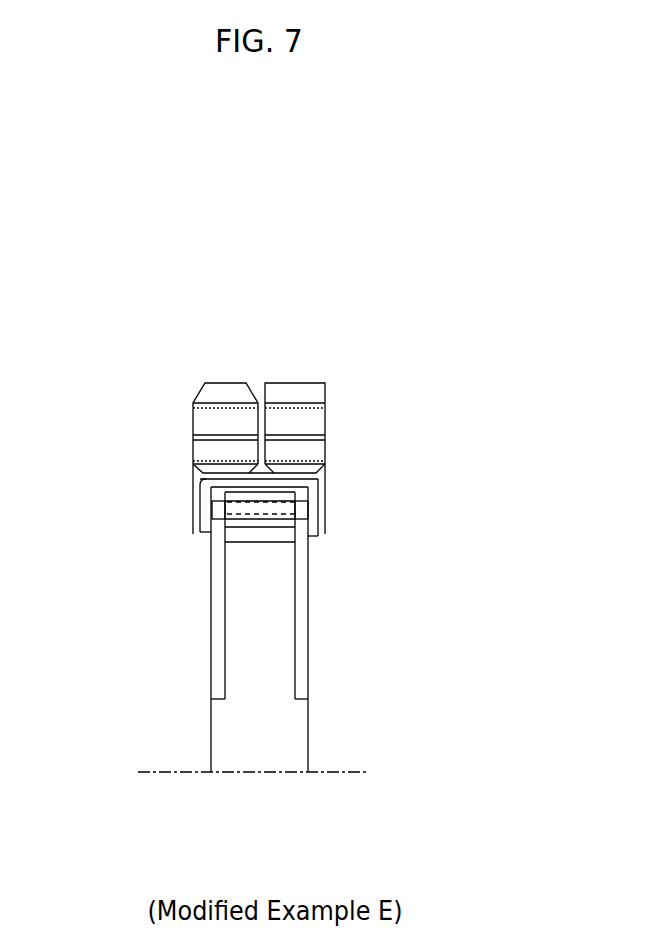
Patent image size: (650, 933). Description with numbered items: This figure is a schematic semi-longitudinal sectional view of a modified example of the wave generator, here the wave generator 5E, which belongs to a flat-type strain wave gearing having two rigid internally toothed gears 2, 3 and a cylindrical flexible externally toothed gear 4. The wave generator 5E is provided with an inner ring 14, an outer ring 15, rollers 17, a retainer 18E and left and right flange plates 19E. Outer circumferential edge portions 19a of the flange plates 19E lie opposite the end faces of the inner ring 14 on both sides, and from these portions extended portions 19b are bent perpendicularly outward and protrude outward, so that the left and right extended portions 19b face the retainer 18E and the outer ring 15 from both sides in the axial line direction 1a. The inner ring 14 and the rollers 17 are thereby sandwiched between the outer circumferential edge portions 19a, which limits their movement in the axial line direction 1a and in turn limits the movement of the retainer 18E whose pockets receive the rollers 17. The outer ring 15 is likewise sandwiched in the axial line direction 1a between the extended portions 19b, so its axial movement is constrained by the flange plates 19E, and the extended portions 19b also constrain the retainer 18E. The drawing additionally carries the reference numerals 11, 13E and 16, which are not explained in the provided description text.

The rigid internally toothed gear 2 is at (335, 391).
The rigid internally toothed gear 3 is at (183, 391).
The cylindrical flexible externally toothed gear 4 is at (179, 483).
The wave generator 5E is at (182, 594).
The shaft 11 is at (265, 683).
The axial line direction 1a is at (340, 774).
The laminated assembly 13E is at (346, 506).
The inner ring 14 is at (319, 558).
The outer ring 15 is at (290, 482).
The upper layer 16 is at (320, 494).
The rollers 17 is at (272, 509).
The retainer 18E is at (297, 508).
The outer circumferential edge portions 19a is at (201, 536).
The extended portions 19b is at (192, 503).
The flange plates 19E is at (214, 671).